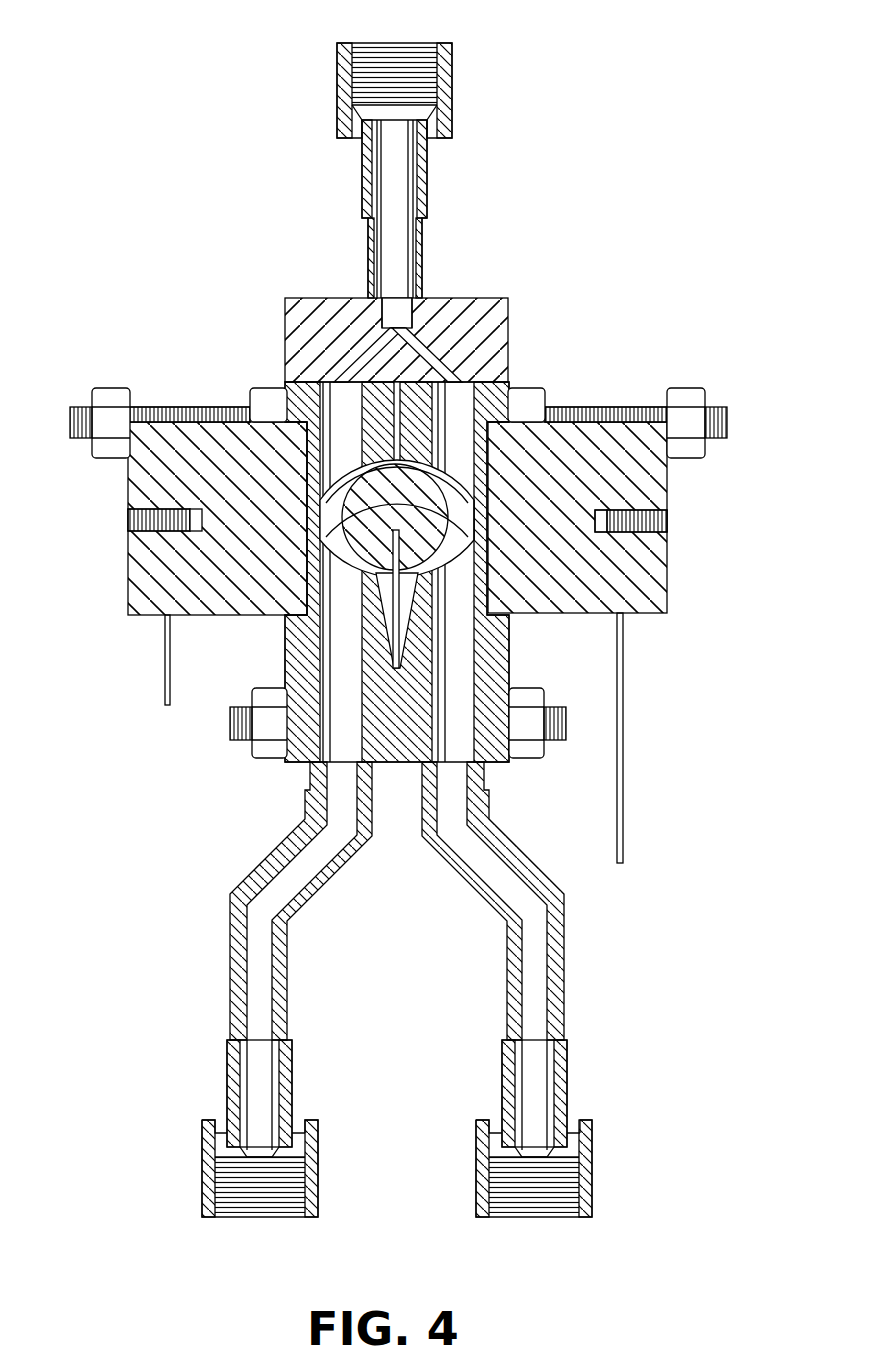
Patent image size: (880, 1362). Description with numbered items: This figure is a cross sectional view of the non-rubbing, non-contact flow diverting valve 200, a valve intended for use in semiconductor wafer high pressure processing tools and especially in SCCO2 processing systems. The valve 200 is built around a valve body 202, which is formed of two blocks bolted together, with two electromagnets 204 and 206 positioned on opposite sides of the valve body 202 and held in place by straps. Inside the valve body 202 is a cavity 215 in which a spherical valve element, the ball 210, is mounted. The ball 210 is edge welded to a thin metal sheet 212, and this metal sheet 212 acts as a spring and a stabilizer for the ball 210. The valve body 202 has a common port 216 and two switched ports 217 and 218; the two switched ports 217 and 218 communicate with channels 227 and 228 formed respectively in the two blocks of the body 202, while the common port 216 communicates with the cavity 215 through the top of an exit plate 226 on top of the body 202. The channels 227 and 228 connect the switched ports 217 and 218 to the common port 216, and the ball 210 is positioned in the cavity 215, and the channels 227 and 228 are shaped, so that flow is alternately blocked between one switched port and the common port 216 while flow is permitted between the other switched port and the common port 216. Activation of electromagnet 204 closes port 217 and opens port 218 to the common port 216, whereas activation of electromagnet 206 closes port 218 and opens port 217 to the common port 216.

The flow diverting valve 200 is at (645, 186).
The valve body 202 is at (391, 599).
The electromagnet 204 is at (667, 552).
The electromagnet 206 is at (128, 582).
The ball 210 is at (377, 518).
The metal sheet 212 is at (455, 597).
The cavity 215 is at (465, 517).
The common port 216 is at (440, 43).
The switched port 217 is at (560, 1217).
The switched port 218 is at (318, 1217).
The exit plate 226 is at (508, 307).
The channel 227 is at (453, 670).
The channel 228 is at (337, 672).